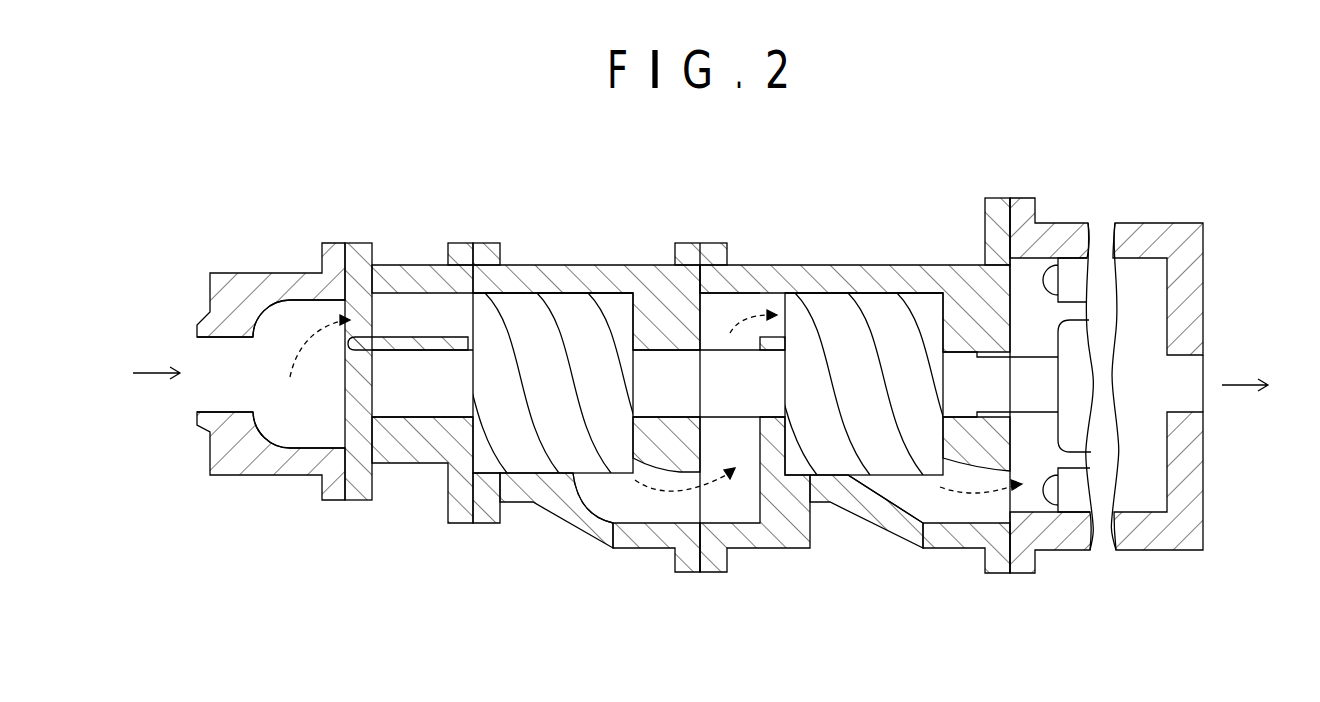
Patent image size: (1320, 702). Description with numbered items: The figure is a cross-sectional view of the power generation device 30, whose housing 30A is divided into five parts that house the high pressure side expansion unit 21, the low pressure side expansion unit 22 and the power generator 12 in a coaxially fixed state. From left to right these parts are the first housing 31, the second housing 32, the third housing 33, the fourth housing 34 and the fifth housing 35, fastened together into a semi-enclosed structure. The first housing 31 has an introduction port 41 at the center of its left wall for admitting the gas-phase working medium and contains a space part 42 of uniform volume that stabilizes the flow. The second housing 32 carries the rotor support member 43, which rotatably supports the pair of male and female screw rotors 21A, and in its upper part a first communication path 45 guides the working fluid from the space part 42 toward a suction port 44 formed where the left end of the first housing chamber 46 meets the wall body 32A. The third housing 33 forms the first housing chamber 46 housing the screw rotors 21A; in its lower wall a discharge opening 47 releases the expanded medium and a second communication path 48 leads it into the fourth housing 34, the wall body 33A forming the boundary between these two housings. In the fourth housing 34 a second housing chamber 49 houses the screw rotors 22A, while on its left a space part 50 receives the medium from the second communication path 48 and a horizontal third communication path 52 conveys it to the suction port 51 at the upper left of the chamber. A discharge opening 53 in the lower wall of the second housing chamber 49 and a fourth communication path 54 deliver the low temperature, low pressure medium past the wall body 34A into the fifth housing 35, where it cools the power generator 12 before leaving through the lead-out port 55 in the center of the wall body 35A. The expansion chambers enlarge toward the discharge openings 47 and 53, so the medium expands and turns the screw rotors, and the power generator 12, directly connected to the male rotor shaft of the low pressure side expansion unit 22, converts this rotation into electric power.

The power generator 12 is at (1090, 268).
The high pressure side expansion unit 21 is at (527, 500).
The screw rotors 21A is at (567, 520).
The low pressure side expansion unit 22 is at (853, 477).
The screw rotors 22A is at (900, 467).
The power generation device 30 is at (918, 178).
The housing 30A is at (1189, 353).
The first housing 31 is at (257, 272).
The second housing 32 is at (425, 266).
The wall body 32A is at (460, 242).
The third housing 33 is at (538, 266).
The wall body 33A is at (685, 243).
The fourth housing 34 is at (832, 266).
The wall body 34A is at (997, 198).
The fifth housing 35 is at (1050, 223).
The wall body 35A is at (1187, 237).
The introduction port 41 is at (202, 402).
The space part 42 is at (320, 419).
The rotor support member 43 is at (408, 407).
The suction port 44 is at (498, 253).
The first communication path 45 is at (395, 297).
The first housing chamber 46 is at (570, 297).
The discharge opening 47 is at (603, 480).
The second communication path 48 is at (648, 520).
The second housing chamber 49 is at (880, 297).
The space part 50 is at (745, 454).
The suction port 51 is at (777, 300).
The third communication path 52 is at (740, 297).
The discharge opening 53 is at (905, 470).
The fourth communication path 54 is at (962, 522).
The lead-out port 55 is at (1188, 358).